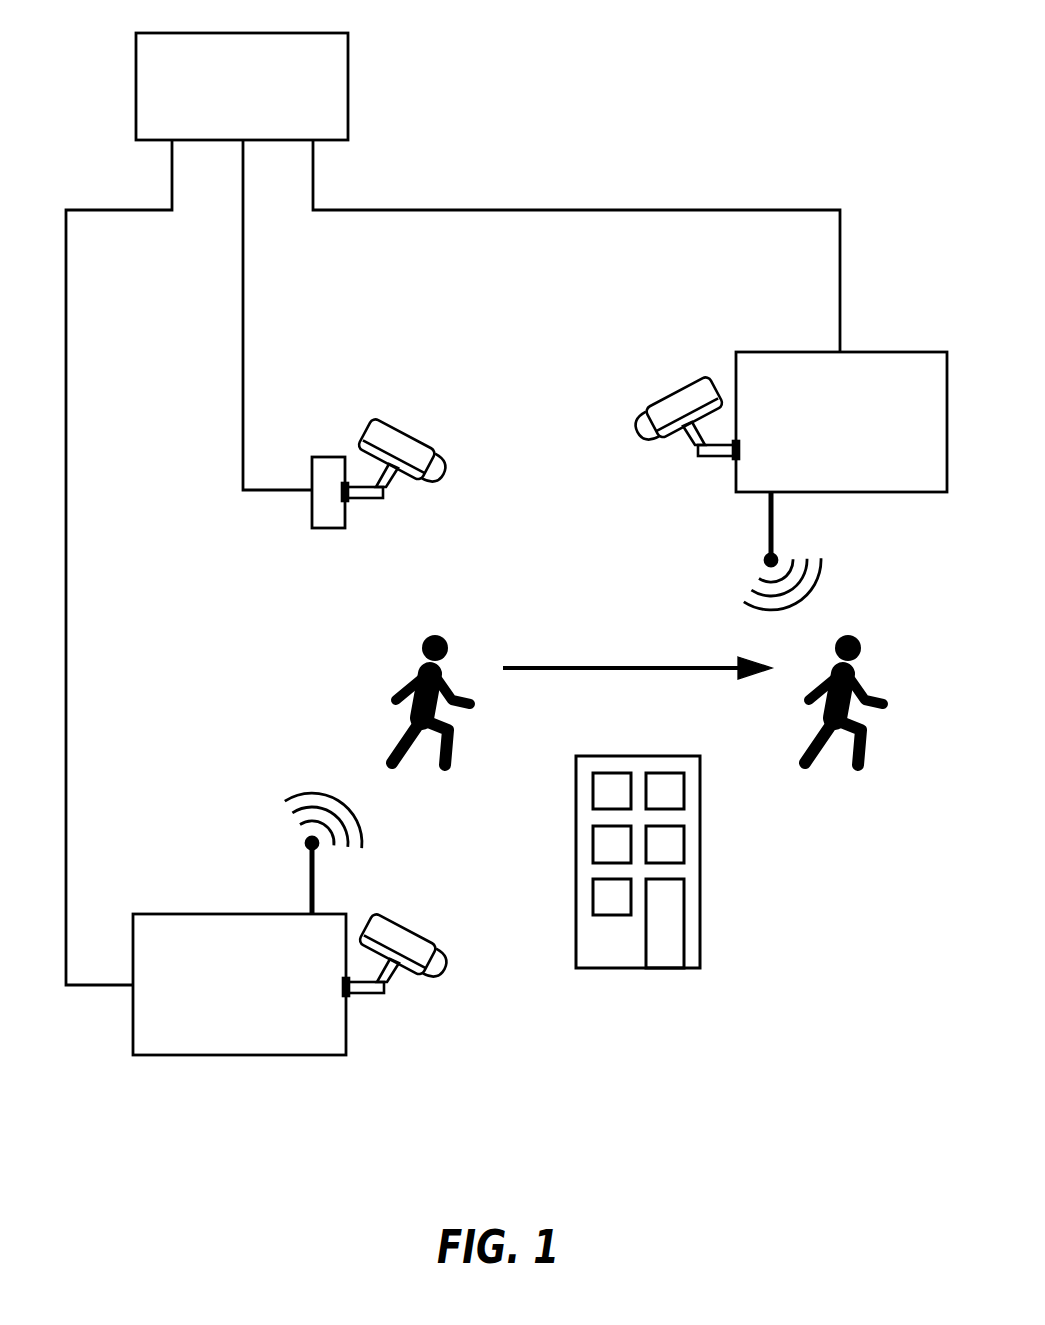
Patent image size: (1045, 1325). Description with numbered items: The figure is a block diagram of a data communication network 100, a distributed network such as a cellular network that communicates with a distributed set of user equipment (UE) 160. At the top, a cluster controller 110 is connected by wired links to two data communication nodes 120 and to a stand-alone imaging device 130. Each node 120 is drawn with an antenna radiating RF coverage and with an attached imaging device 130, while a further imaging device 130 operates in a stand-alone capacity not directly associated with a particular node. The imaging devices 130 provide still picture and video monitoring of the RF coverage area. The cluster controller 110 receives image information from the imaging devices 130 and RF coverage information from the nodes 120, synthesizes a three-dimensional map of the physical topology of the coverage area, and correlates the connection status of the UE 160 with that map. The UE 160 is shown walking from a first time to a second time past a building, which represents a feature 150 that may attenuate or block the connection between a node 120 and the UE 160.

The data communication network 100 is at (67, 1237).
The cluster controller 110 is at (148, 33).
The data communication node 120 is at (745, 352).
The imaging device 130 is at (415, 436).
The feature 150 is at (590, 756).
The user equipment (UE) 160 is at (430, 634).